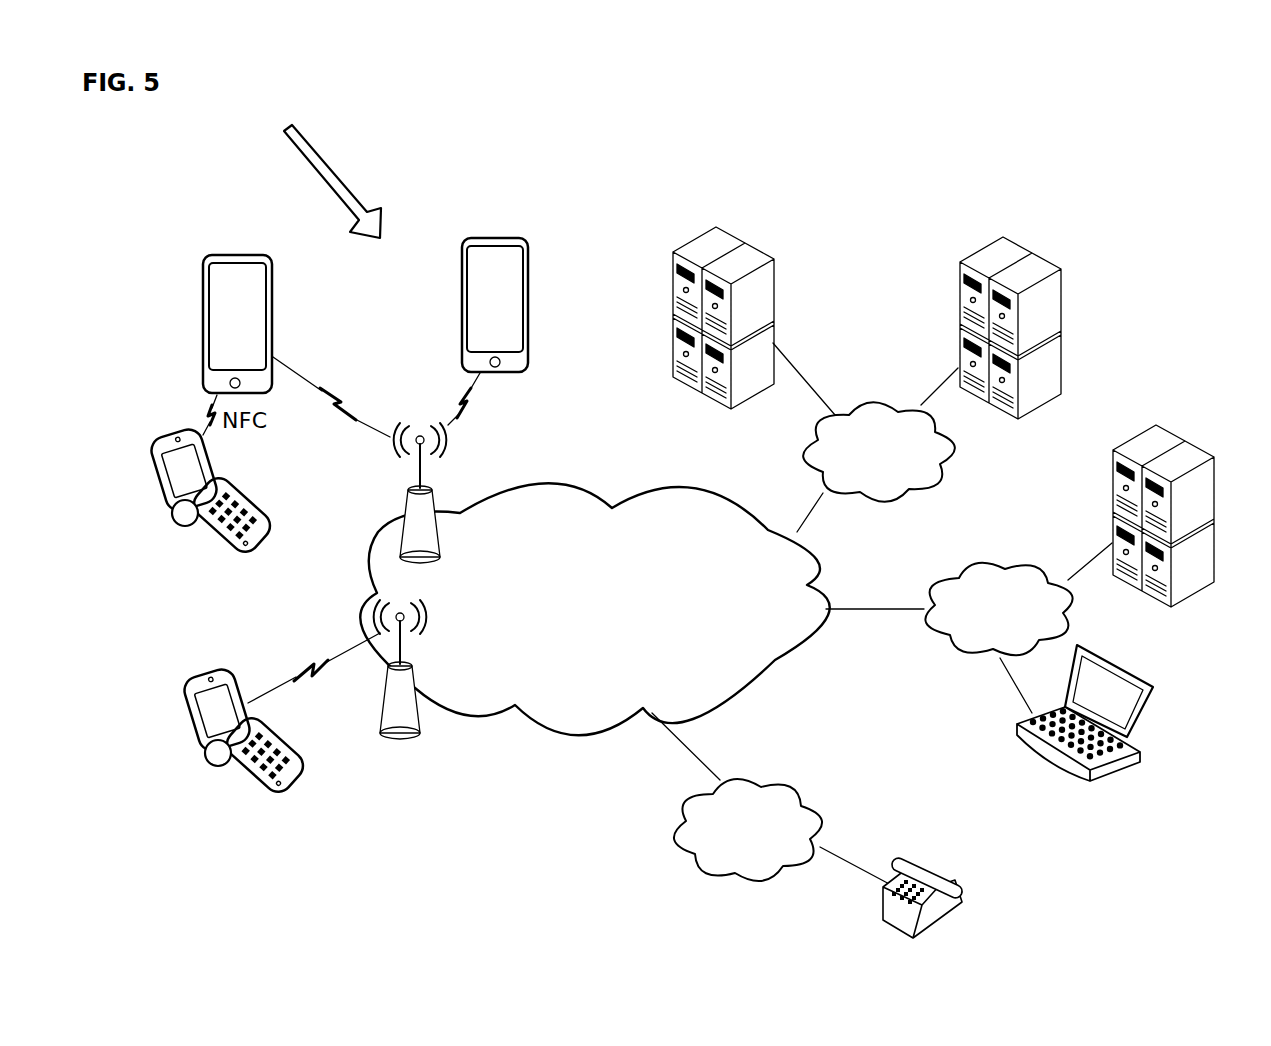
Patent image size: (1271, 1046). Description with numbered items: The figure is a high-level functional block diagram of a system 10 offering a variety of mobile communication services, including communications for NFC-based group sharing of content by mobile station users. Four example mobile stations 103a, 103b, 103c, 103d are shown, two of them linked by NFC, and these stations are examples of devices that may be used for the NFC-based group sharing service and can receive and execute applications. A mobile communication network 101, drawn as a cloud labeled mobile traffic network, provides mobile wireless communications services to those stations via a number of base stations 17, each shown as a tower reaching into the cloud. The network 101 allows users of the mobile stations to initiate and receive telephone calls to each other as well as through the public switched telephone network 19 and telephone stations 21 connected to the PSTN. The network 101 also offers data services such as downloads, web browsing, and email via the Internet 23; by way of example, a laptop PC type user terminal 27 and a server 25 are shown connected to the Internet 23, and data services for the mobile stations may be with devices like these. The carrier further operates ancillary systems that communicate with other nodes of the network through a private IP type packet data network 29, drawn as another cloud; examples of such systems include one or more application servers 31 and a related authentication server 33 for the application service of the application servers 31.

The system 10 is at (321, 173).
The mobile communication network 101 is at (652, 488).
The mobile station 103a is at (203, 303).
The mobile station 103b is at (152, 460).
The mobile station 103c is at (180, 700).
The mobile station 103d is at (528, 355).
The base station 17 is at (405, 510).
The public switched telephone network 19 is at (820, 815).
The telephone station 21 is at (882, 920).
The Internet 23 is at (945, 650).
The server 25 is at (1113, 520).
The laptop PC type user terminal 27 is at (1047, 762).
The private IP type packet data network 29 is at (953, 464).
The application server 31 is at (774, 270).
The authentication server 33 is at (1062, 330).